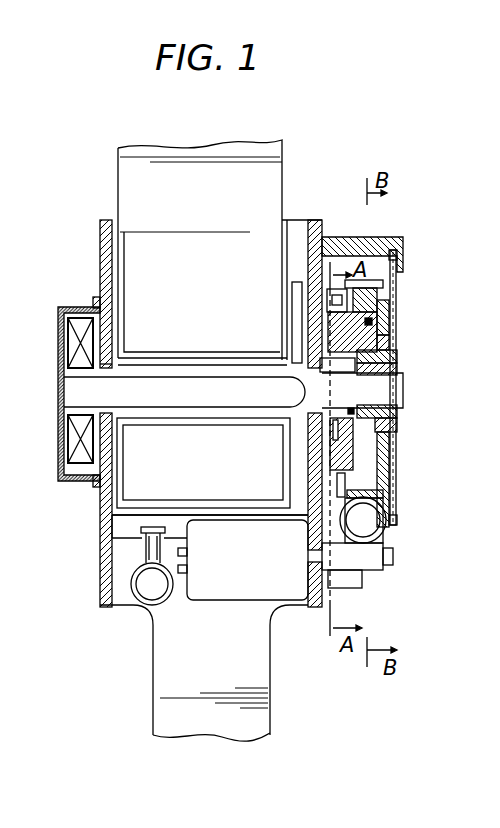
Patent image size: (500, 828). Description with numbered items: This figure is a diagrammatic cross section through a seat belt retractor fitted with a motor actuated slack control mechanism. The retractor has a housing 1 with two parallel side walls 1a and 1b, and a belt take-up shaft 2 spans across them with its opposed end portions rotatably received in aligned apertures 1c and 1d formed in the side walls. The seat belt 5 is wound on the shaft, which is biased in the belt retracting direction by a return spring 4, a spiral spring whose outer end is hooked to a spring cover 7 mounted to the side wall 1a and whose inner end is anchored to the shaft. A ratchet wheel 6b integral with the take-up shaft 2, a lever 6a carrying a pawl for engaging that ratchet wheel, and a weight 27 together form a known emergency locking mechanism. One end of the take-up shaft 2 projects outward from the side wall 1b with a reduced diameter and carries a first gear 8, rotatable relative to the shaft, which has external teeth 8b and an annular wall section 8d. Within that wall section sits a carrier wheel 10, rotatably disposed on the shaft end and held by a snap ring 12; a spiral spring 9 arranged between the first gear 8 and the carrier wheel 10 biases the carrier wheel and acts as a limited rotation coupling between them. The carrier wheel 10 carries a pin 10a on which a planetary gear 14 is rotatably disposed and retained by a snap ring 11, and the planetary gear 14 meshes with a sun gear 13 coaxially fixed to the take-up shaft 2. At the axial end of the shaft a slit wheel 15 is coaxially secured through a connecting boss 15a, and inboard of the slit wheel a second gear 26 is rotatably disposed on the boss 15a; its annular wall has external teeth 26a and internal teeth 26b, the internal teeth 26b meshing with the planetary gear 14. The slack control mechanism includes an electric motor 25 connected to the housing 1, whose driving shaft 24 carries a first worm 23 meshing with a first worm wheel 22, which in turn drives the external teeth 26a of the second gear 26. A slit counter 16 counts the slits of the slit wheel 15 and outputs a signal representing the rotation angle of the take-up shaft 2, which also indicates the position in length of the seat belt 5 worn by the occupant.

The housing 1 is at (322, 217).
The side wall 1a is at (104, 238).
The side wall 1b is at (318, 230).
The aperture 1c is at (108, 366).
The aperture 1d is at (300, 378).
The belt take-up shaft 2 is at (398, 392).
The return spring 4 is at (68, 447).
The seat belt 5 is at (285, 162).
The lever 6a is at (128, 540).
The ratchet wheel 6b is at (296, 283).
The spring cover 7 is at (74, 475).
The first gear 8 is at (350, 297).
The external teeth 8b is at (335, 292).
The annular wall section 8d is at (345, 478).
The spiral spring 9 is at (378, 322).
The carrier wheel 10 is at (348, 455).
The pin 10a is at (385, 342).
The snap ring 11 is at (383, 300).
The snap ring 12 is at (392, 430).
The sun gear 13 is at (392, 415).
The planetary gear 14 is at (380, 352).
The slit wheel 15 is at (382, 497).
The connecting boss 15a is at (378, 372).
The slit counter 16 is at (403, 238).
The first worm wheel 22 is at (383, 533).
The first worm 23 is at (370, 580).
The driving shaft 24 is at (393, 560).
The electric motor 25 is at (248, 600).
The second gear 26 is at (396, 282).
The external teeth 26a is at (397, 520).
The internal teeth 26b is at (397, 258).
The weight 27 is at (146, 585).